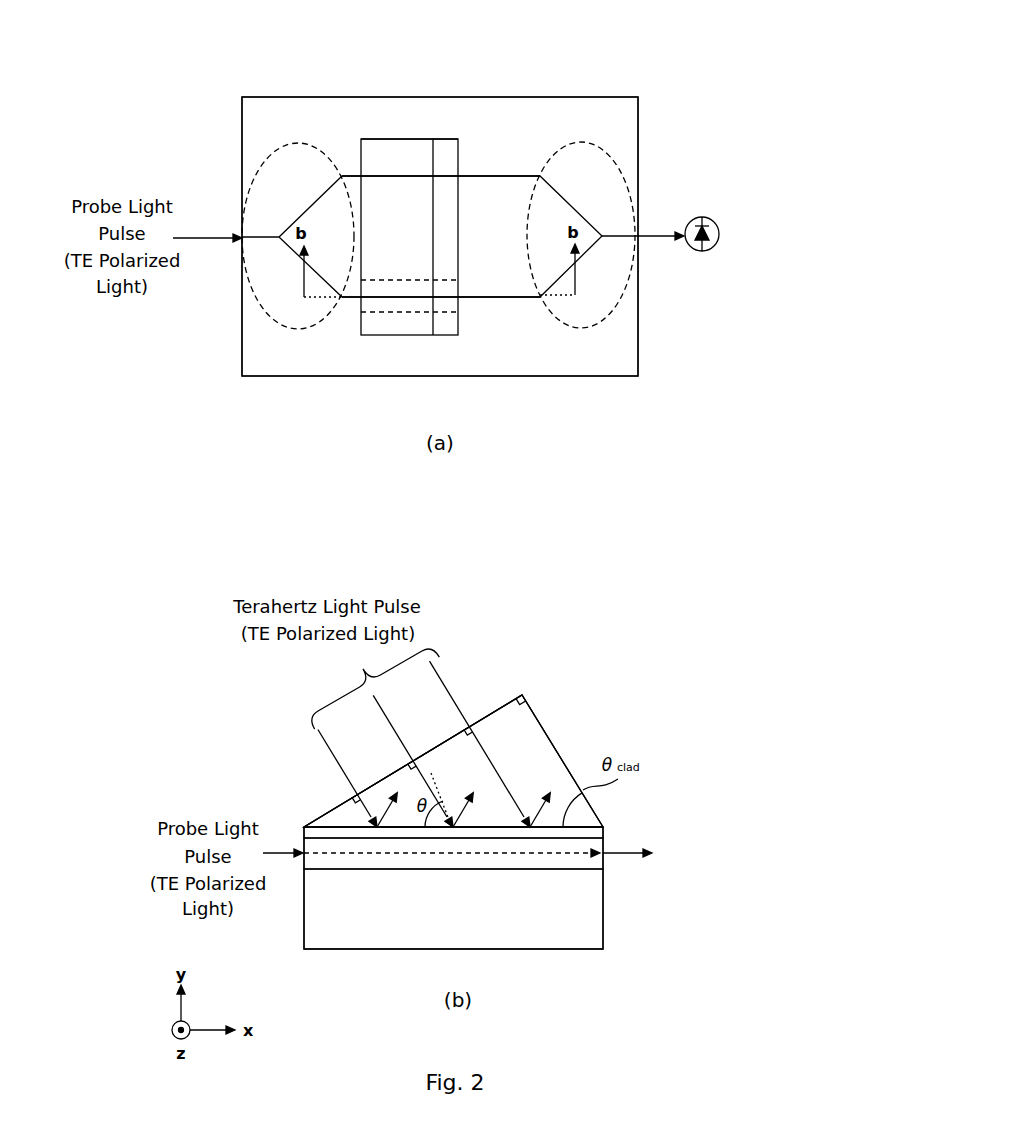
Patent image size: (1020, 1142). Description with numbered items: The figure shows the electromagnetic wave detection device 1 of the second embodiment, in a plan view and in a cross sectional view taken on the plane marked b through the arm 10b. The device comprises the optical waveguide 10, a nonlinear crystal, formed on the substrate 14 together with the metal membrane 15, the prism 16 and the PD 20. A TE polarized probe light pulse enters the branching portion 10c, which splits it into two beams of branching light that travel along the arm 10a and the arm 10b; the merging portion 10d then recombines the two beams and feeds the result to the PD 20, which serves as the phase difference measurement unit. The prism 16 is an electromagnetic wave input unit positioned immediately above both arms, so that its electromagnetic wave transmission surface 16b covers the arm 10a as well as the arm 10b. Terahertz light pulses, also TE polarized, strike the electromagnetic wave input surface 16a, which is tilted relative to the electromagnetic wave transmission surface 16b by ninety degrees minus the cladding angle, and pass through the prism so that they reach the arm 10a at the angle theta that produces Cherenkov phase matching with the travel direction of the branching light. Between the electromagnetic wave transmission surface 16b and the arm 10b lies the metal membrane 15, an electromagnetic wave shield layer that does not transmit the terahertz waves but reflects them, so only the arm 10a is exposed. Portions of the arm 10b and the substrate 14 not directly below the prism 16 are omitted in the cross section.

The electromagnetic wave detection device 1 is at (262, 80).
The optical waveguide 10 is at (492, 309).
The arm 10a is at (509, 176).
The arm 10b is at (515, 297).
The branching portion 10c is at (337, 312).
The merging portion 10d is at (563, 328).
The substrate 14 is at (638, 323).
The metal membrane 15 is at (411, 280).
The prism 16 is at (421, 139).
The electromagnetic wave input surface 16a is at (393, 150).
The electromagnetic wave transmission surface 16b is at (505, 825).
The PD (Photo Detector) 20 is at (702, 217).